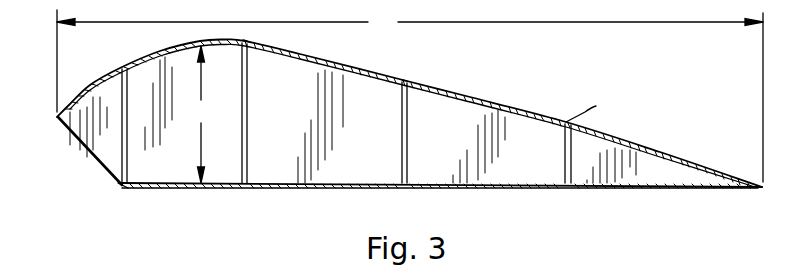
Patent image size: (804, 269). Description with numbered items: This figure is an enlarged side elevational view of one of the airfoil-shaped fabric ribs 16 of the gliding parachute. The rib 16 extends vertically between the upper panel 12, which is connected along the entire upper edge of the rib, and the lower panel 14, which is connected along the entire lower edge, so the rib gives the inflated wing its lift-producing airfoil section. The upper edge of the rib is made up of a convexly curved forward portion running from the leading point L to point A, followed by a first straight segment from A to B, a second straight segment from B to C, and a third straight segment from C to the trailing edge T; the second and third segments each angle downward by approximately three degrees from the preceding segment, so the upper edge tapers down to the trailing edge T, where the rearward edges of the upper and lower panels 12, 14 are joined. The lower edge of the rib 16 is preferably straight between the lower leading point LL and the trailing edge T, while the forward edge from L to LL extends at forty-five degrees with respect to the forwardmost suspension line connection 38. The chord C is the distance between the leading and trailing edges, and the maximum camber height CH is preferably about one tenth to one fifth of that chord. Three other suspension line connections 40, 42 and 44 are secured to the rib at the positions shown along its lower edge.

The upper panel 12 is at (490, 97).
The lower panel 14 is at (358, 188).
The airfoil-shaped fabric rib 16 is at (442, 167).
The forwardmost suspension line connection 38 is at (126, 134).
The suspension line connection 40 is at (248, 118).
The suspension line connection 42 is at (408, 133).
The suspension line connection 44 is at (565, 151).
The point A is at (248, 40).
The point B is at (404, 78).
The chord C is at (410, 96).
The maximum camber height CH is at (204, 114).
The leading edge point L is at (57, 119).
The lower leading point LL is at (121, 189).
The trailing edge T is at (760, 190).